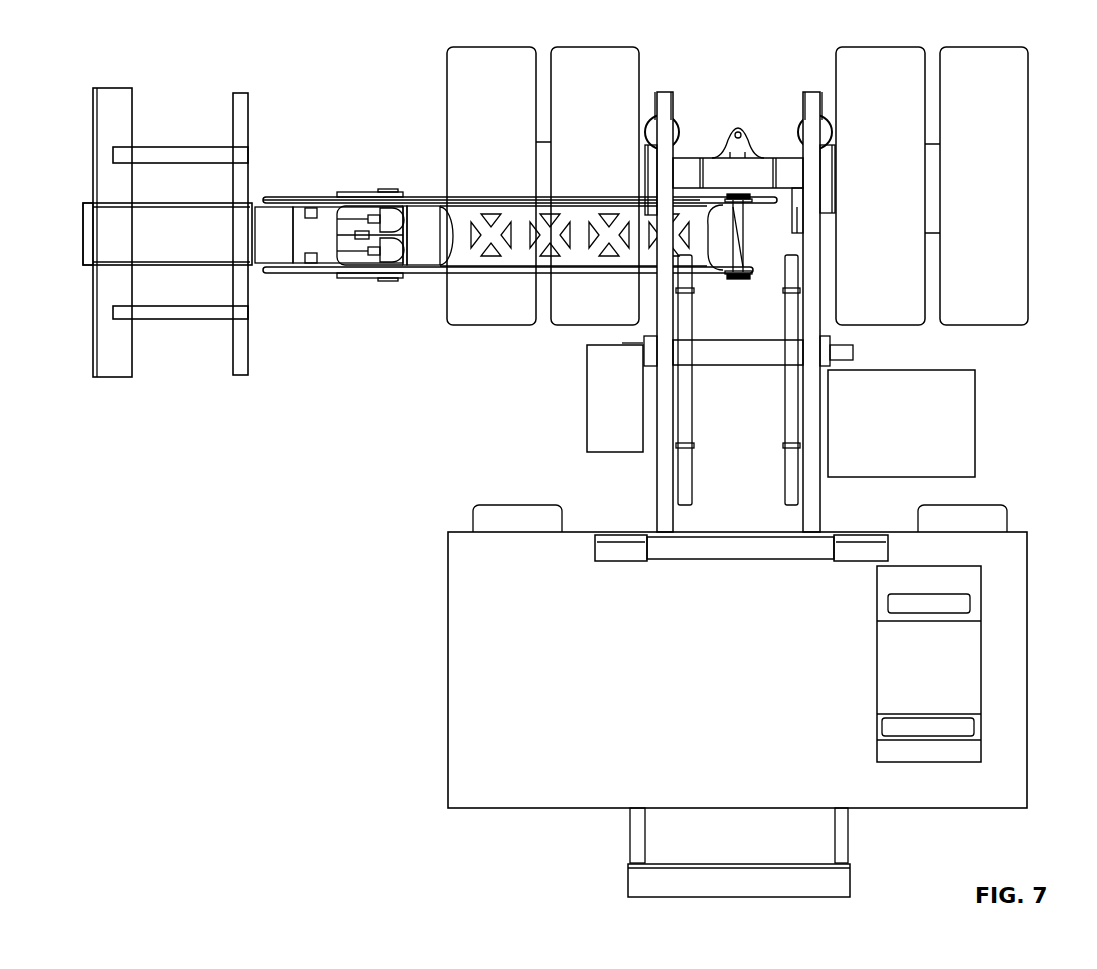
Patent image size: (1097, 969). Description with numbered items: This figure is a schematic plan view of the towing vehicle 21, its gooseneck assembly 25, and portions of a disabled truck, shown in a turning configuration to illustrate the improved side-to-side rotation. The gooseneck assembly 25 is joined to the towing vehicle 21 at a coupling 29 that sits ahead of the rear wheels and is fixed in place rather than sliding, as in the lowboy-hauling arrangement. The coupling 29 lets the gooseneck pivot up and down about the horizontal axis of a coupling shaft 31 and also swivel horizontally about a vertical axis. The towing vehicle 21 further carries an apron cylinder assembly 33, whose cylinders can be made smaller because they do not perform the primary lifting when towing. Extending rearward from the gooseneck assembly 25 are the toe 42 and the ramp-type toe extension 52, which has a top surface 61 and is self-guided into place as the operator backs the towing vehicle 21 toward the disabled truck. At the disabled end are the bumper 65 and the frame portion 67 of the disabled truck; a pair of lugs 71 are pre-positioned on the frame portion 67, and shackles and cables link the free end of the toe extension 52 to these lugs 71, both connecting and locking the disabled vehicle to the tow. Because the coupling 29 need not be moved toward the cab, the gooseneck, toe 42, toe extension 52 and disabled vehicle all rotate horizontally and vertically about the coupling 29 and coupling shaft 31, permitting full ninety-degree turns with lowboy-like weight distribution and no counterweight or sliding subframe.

The towing vehicle 21 is at (536, 406).
The gooseneck assembly 25 is at (367, 163).
The coupling 29 is at (767, 240).
The coupling shaft 31 is at (742, 277).
The apron cylinder assembly 33 is at (692, 112).
The toe 42 is at (423, 276).
The toe extension 52 is at (193, 267).
The top surface 61 is at (204, 245).
The bumper 65 is at (242, 93).
The frame portion 67 is at (107, 88).
The lugs 71 is at (91, 203).